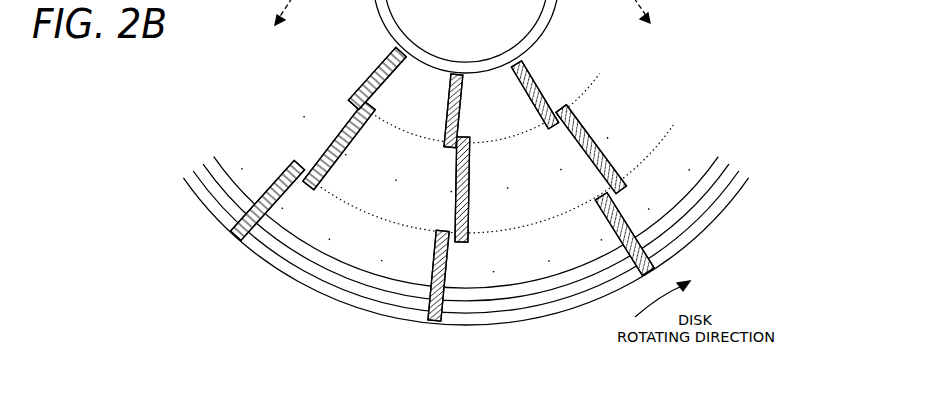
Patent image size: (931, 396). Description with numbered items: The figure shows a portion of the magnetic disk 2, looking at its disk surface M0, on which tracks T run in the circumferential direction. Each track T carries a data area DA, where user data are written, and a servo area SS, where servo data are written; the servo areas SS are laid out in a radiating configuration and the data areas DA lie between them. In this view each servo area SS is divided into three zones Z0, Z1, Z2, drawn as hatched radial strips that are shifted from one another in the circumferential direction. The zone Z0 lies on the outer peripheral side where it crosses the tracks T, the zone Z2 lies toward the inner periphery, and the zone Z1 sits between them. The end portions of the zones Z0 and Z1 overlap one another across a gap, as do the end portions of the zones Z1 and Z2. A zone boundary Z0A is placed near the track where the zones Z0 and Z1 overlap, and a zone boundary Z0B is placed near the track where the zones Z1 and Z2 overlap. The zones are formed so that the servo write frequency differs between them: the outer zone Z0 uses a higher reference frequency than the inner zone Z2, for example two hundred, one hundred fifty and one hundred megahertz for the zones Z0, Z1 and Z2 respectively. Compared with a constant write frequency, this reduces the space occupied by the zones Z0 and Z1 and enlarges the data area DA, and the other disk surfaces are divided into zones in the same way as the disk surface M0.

The magnetic disk 2 is at (482, 162).
The track T is at (722, 192).
The disk surface M0 is at (505, 162).
The zone Z0 is at (448, 280).
The zone Z1 is at (470, 172).
The zone Z2 is at (458, 114).
The zone boundary Z0A is at (287, 160).
The zone boundary Z0B is at (347, 93).
The data area DA is at (422, 327).
The servo area SS is at (543, 395).